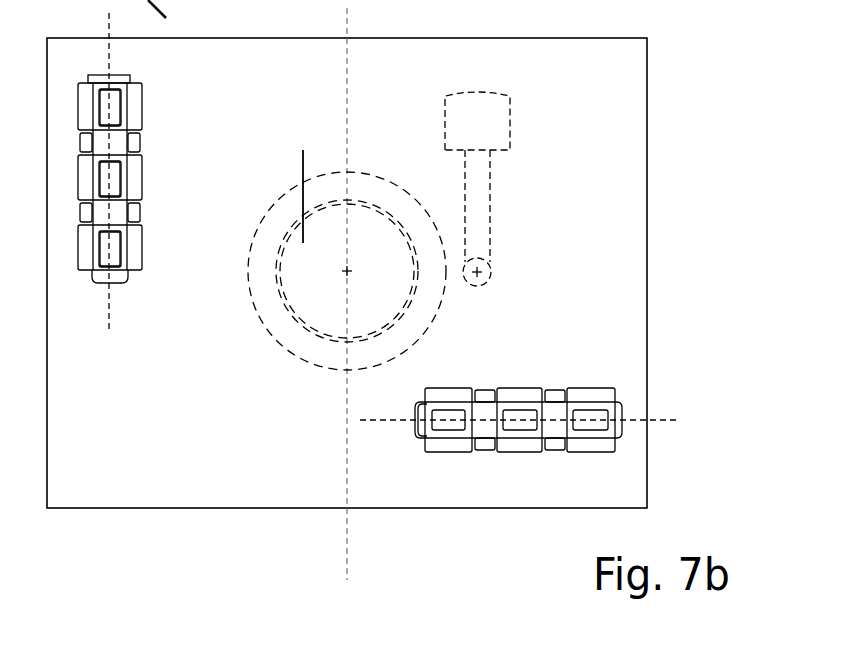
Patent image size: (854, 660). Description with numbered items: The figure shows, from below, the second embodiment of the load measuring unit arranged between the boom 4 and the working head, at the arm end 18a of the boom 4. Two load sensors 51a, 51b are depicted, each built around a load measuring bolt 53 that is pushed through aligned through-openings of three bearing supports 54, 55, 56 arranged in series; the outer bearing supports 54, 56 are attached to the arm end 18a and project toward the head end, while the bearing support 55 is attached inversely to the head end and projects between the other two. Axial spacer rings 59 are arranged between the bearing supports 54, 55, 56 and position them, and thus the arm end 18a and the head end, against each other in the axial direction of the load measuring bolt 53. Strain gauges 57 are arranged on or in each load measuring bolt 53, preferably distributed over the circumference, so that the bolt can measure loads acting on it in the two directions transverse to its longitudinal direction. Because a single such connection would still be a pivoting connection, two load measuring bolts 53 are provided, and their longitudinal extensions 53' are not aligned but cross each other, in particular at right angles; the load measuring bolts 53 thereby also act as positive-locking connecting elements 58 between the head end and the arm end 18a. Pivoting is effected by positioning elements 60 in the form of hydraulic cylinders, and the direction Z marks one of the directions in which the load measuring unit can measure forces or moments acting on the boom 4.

The load sensor 51b is at (168, 103).
The load sensor 51a is at (362, 460).
The positive-locking connecting element 58 is at (122, 145).
The load measuring bolt 53 is at (110, 178).
The longitudinal extension 53' is at (393, 231).
The boom 4 is at (304, 186).
The arm end 18a is at (280, 322).
The Z direction Z is at (349, 273).
The positioning element 60 is at (437, 100).
The bearing support 54 is at (449, 388).
The bearing support 55 is at (513, 388).
The bearing support 56 is at (589, 388).
The strain gauge 57 is at (460, 428).
The axial spacer ring 59 is at (483, 390).